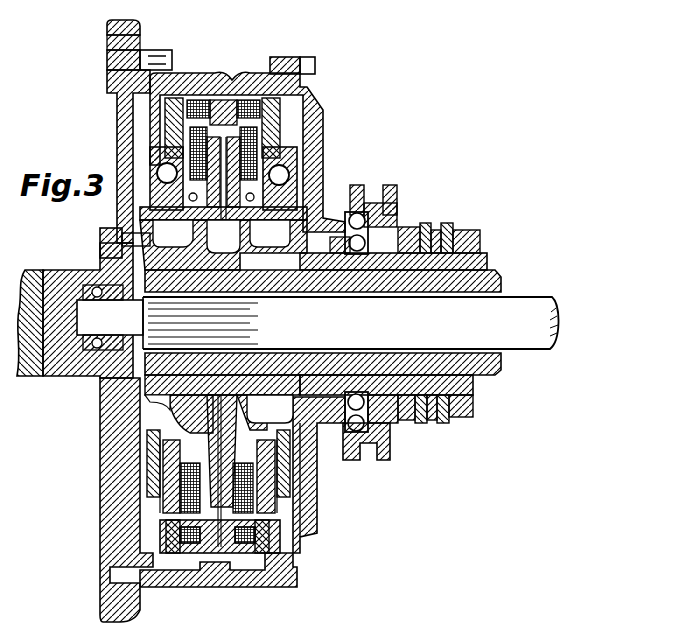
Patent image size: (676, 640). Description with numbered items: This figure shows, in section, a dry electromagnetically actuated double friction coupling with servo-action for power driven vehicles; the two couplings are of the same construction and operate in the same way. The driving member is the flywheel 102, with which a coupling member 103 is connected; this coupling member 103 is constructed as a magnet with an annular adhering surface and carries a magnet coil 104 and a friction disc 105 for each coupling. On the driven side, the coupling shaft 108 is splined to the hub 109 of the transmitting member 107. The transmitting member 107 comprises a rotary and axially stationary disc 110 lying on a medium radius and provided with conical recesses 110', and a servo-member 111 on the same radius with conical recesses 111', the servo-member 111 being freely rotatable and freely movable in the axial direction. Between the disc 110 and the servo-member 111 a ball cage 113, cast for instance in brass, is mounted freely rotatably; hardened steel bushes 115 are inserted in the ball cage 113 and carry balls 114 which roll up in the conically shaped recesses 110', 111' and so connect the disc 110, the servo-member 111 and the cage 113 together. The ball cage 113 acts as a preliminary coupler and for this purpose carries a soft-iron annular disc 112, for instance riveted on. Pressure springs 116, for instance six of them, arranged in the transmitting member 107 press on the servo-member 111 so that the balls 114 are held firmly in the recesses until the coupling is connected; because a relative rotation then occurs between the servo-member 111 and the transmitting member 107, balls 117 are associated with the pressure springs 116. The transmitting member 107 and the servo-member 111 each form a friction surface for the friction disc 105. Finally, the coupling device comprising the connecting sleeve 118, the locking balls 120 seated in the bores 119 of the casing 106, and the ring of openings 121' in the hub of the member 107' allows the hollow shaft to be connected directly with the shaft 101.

The shaft 101 is at (33, 372).
The flywheel 102 is at (118, 82).
The coupling member 103 is at (223, 92).
The magnet coil 104 is at (193, 558).
The friction disc 105 is at (187, 513).
The casing 106 is at (313, 450).
The transmitting member 107 is at (222, 441).
The member 107' is at (275, 405).
The coupling shaft 108 is at (505, 345).
The hub 109 is at (497, 272).
The rotary and axially stationary disc 110 is at (212, 467).
The conical recesses 110' is at (278, 140).
The servo-member 111 is at (220, 471).
The conical recesses 111' is at (271, 241).
The annular disc 112 is at (160, 533).
The ball cage 113 is at (168, 128).
The balls 114 is at (293, 173).
The hardened steel bushes 115 is at (144, 243).
The pressure springs 116 is at (217, 191).
The balls 117 is at (223, 238).
The connecting sleeve 118 is at (392, 442).
The bores 119 is at (368, 230).
The locking balls 120 is at (366, 205).
The ring of openings 121' is at (365, 376).